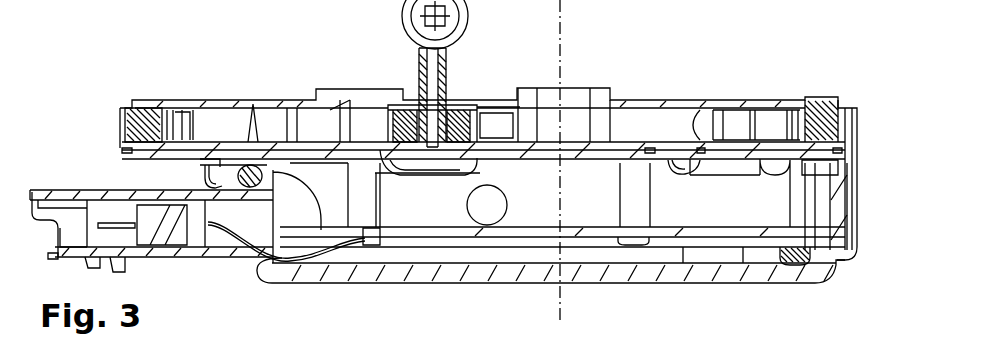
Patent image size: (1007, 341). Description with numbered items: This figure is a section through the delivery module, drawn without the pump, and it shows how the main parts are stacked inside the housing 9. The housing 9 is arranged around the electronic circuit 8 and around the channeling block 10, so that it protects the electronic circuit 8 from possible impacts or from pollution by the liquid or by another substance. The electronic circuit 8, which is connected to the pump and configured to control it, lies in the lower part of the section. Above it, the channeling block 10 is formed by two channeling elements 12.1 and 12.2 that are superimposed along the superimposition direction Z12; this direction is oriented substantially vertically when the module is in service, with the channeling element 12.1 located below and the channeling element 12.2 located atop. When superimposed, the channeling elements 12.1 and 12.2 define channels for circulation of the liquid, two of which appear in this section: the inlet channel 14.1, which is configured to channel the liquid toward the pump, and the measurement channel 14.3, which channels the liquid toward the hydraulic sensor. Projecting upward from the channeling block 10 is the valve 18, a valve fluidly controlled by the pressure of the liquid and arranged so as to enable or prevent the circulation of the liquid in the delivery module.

The electronic circuit 8 is at (592, 228).
The housing 9 is at (835, 210).
The channeling block 10 is at (425, 141).
The channeling element 12.1 is at (128, 152).
The channeling element 12.2 is at (133, 146).
The inlet channel 14.1 is at (678, 158).
The measurement channel 14.3 is at (423, 160).
The valve 18 is at (410, 18).
The superimposition direction Z12 is at (587, 160).